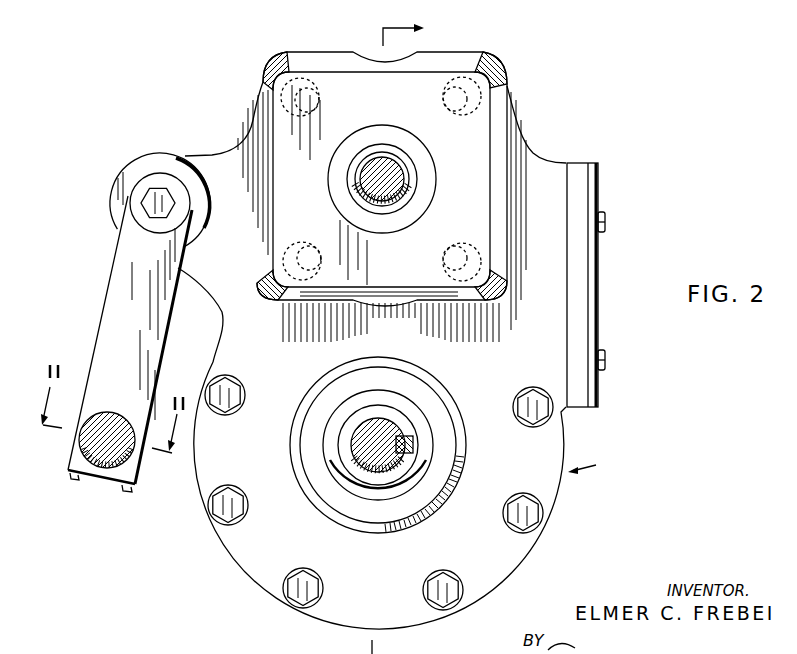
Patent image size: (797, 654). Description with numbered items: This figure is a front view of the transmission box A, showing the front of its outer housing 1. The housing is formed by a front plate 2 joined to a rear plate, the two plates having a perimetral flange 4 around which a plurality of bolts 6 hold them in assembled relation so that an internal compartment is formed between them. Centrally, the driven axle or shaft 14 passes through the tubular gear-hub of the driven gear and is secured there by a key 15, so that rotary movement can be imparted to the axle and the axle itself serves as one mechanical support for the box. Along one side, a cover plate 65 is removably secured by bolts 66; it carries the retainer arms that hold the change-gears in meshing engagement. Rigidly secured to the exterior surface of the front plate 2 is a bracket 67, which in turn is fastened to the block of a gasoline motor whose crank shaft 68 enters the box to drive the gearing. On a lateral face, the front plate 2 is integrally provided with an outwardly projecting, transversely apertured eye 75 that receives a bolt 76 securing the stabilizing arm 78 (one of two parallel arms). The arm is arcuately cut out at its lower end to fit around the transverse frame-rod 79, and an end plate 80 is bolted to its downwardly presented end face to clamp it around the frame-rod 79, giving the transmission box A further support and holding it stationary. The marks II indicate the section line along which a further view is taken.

The outer housing 1 is at (240, 574).
The front plate 2 is at (500, 580).
The perimetral flange 4 is at (409, 336).
The bolts 6 is at (222, 415).
The driven axle or shaft 14 is at (360, 432).
The key 15 is at (413, 438).
The cover plate 65 is at (600, 273).
The bolts 66 is at (606, 215).
The bracket 67 is at (279, 217).
The crank shaft 68 is at (398, 181).
The eye 75 is at (148, 155).
The bolt 76 is at (150, 221).
The stabilizing arm 78 is at (98, 320).
The frame-rod 79 is at (107, 412).
The end plate 80 is at (68, 450).
The section line II- II is at (112, 409).
The transmission box A is at (590, 464).